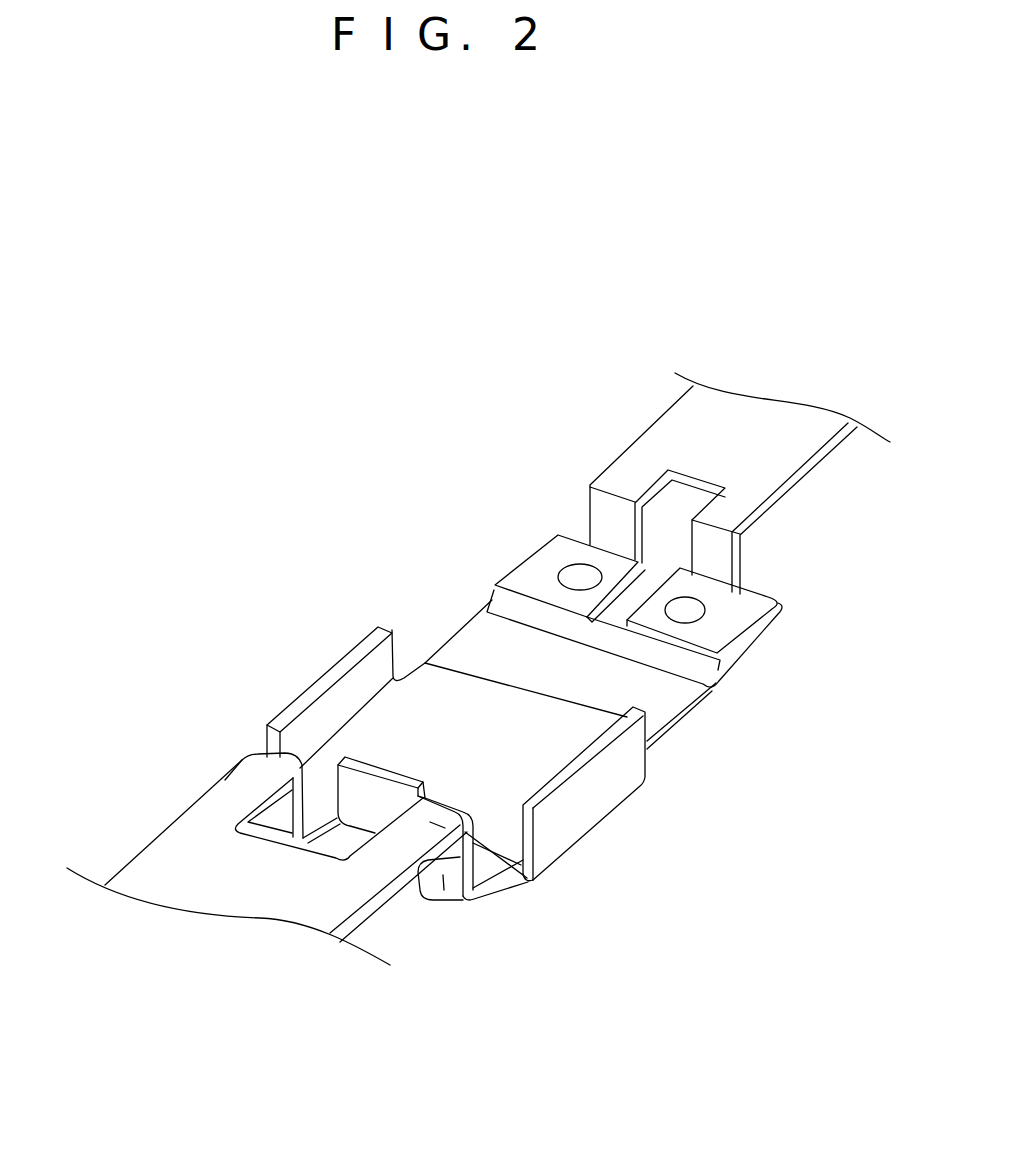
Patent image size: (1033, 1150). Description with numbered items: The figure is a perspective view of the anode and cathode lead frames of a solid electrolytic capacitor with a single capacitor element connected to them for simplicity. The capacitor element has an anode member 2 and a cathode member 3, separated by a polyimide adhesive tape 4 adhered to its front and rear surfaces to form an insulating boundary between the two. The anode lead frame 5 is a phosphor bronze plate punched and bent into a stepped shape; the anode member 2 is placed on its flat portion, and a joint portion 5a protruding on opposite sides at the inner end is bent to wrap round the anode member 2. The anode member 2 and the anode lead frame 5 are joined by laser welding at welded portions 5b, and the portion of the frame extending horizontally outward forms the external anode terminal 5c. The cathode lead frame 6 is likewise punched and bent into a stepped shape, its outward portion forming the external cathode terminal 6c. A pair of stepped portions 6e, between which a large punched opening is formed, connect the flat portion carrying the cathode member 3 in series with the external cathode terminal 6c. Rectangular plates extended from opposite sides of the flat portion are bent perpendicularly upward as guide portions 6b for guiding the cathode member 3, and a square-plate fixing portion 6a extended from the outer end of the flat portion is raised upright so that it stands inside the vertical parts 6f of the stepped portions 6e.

The anode member 2 is at (637, 598).
The cathode member 3 is at (473, 700).
The polyimide adhesive tape 4 is at (655, 698).
The anode lead frame 5 is at (748, 410).
The joint portion 5a is at (541, 556).
The welded portion 5b is at (690, 612).
The external anode terminal 5c is at (767, 482).
The cathode lead frame 6 is at (252, 890).
The fixing portion 6a is at (366, 755).
The guide portion 6b is at (288, 701).
The external cathode terminal 6c is at (350, 890).
The stepped portion 6e is at (253, 773).
The vertical part 6f is at (268, 819).